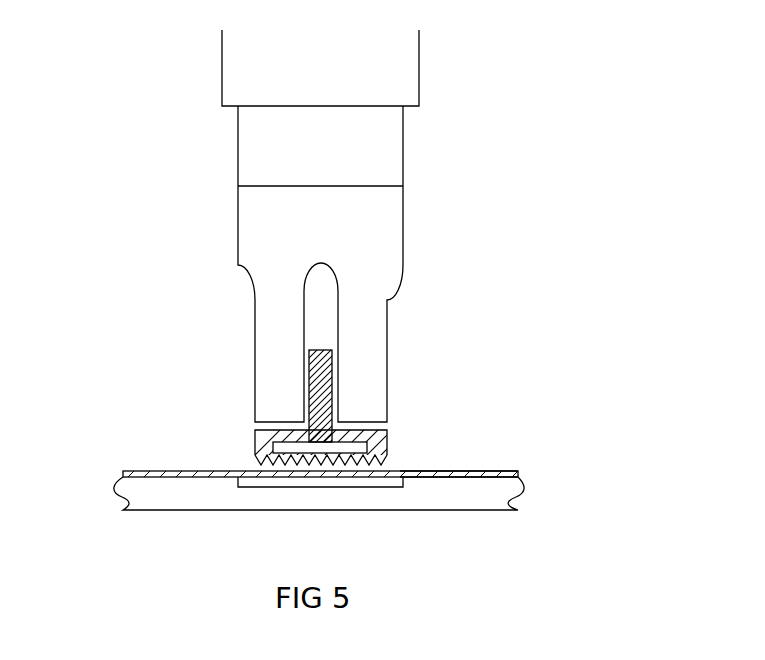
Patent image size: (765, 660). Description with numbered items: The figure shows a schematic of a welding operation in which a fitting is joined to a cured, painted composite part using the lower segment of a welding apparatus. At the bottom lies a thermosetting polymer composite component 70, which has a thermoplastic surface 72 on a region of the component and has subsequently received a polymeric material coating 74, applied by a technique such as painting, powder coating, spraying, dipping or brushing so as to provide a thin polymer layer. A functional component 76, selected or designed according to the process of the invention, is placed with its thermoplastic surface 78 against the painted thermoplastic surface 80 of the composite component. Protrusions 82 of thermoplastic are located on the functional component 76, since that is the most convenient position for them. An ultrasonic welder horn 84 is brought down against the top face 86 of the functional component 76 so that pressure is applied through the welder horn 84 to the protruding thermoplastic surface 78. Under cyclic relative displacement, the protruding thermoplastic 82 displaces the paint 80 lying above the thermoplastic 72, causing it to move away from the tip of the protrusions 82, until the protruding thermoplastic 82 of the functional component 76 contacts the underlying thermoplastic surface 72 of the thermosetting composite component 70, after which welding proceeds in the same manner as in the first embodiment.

The thermosetting polymer composite component 70 is at (222, 490).
The thermoplastic surface 72 is at (343, 480).
The polymeric material coating 74 is at (389, 432).
The functional component 76 is at (458, 447).
The thermoplastic surface 78 is at (318, 470).
The painted thermoplastic surface 80 is at (328, 465).
The protrusions 82 is at (442, 463).
The ultrasonic welder horn 84 is at (430, 342).
The top face 86 is at (438, 432).